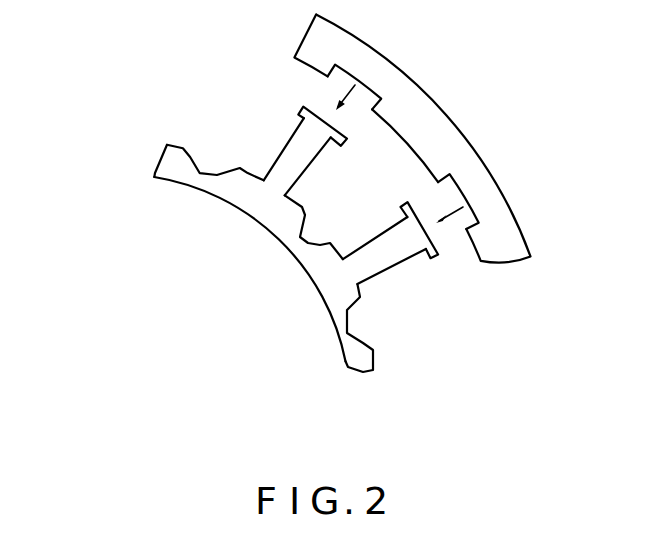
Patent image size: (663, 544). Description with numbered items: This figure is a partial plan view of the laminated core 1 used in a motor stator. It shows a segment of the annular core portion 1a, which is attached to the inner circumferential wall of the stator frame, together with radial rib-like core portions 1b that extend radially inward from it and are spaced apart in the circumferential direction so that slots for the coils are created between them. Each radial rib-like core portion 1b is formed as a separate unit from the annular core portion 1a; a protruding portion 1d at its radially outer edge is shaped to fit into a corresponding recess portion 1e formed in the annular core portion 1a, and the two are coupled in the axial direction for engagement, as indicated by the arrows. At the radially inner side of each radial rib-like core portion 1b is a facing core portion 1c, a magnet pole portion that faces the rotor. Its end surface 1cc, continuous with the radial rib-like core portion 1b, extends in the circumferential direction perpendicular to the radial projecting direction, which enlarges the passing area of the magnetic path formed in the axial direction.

The laminated core 1 is at (336, 245).
The annular core portion 1a is at (422, 139).
The radial rib-like core portion 1b is at (345, 201).
The facing core portion 1c is at (249, 269).
The end surface 1cc is at (298, 257).
The protruding portion 1d is at (440, 141).
The recess portion 1e is at (329, 221).